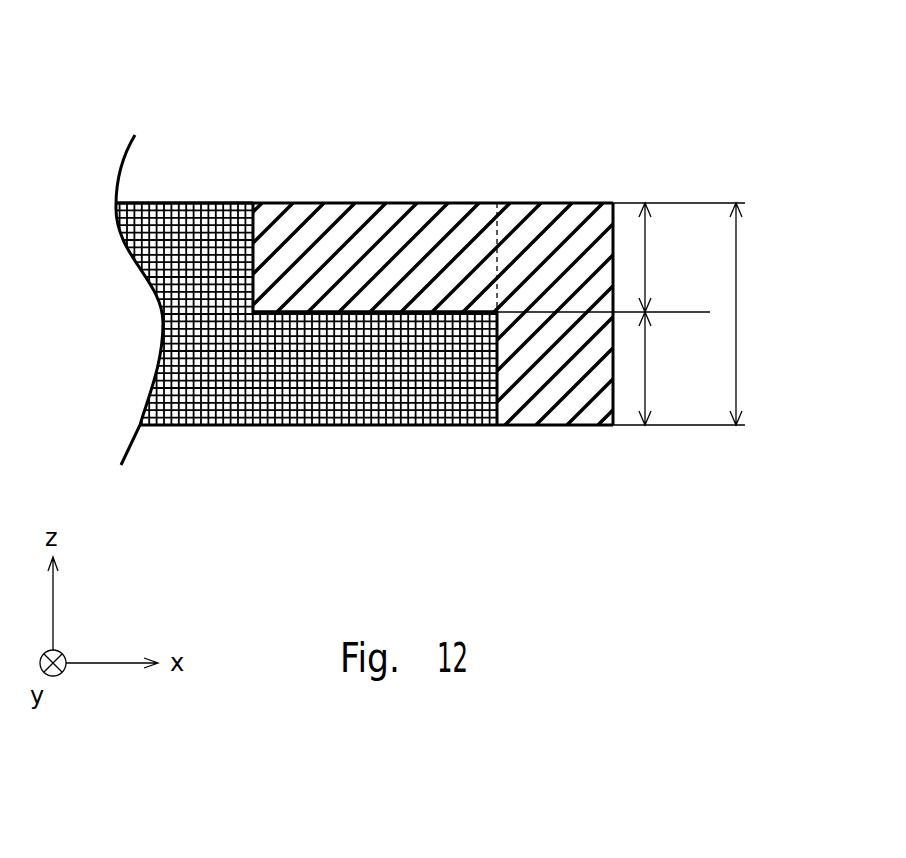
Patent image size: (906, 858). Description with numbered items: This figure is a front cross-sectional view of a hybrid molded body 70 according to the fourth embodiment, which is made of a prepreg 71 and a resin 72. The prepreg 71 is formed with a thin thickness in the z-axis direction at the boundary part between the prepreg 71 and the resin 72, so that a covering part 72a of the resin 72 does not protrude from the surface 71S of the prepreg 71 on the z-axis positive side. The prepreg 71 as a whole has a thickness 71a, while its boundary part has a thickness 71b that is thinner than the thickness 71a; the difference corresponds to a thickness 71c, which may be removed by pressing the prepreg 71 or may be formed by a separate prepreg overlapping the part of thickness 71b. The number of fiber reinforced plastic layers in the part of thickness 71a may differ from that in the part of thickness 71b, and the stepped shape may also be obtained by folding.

The hybrid molded body 70 is at (430, 285).
The prepreg 71 is at (305, 400).
The surface of the prepreg 71S is at (192, 188).
The resin 72 is at (542, 222).
The covering part 72a is at (375, 282).
The thickness 71a is at (761, 314).
The thickness 71b is at (621, 368).
The thickness 71c is at (679, 257).